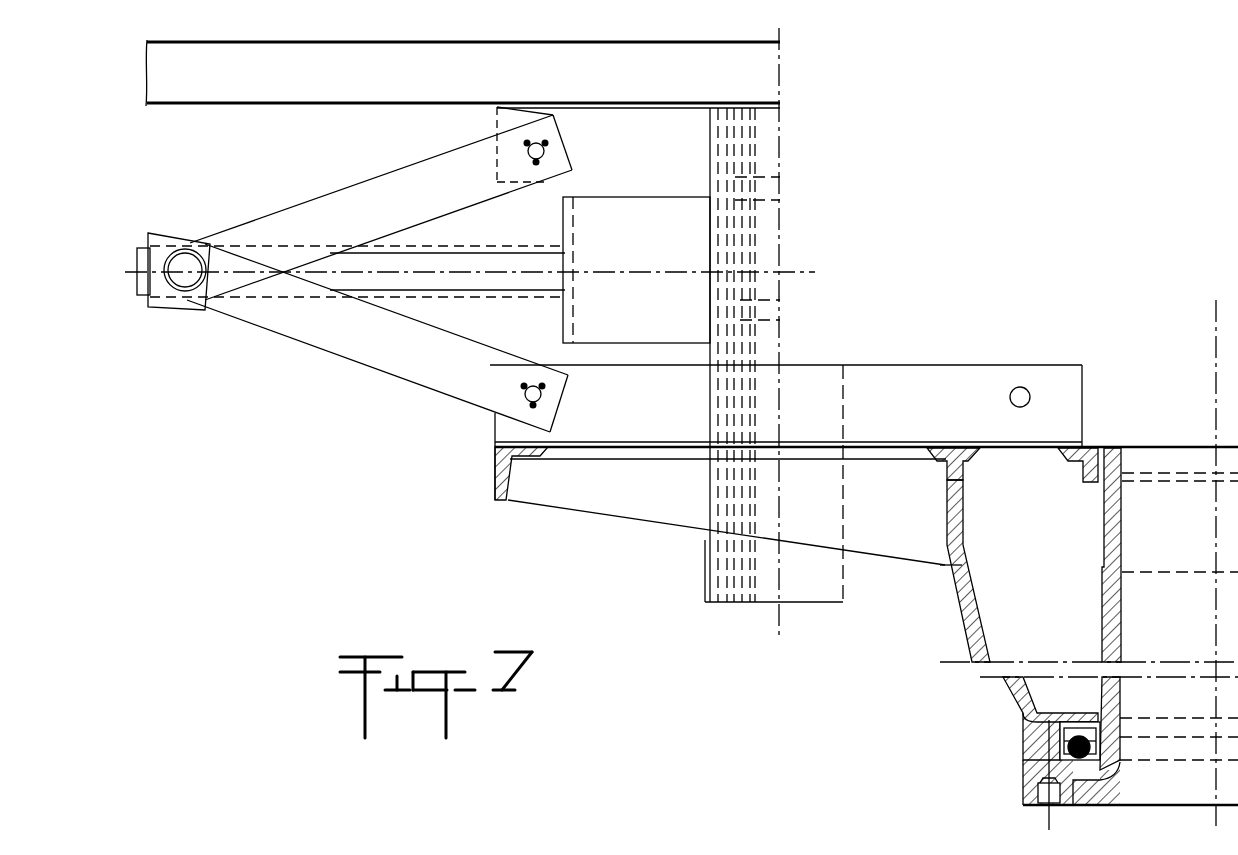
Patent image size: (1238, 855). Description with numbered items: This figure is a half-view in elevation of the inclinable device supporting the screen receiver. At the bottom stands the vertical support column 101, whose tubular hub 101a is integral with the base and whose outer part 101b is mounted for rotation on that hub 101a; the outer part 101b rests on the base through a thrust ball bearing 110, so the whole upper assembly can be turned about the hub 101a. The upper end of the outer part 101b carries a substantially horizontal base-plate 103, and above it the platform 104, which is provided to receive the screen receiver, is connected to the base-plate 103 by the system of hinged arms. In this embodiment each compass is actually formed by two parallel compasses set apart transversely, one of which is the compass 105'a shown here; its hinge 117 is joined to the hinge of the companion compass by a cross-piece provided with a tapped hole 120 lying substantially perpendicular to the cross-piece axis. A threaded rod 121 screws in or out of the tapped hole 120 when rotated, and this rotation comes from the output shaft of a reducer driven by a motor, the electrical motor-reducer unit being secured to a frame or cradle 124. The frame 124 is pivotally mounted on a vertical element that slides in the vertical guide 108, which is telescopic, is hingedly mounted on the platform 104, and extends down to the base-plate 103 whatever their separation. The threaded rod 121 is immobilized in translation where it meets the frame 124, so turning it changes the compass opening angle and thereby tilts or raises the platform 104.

The platform 104 is at (328, 77).
The tapped hole 120 is at (155, 233).
The hinge 117 is at (188, 292).
The compass 105'a is at (377, 338).
The threaded rod 121 is at (465, 260).
The frame or cradle 124 is at (690, 238).
The fixed vertical guide 108 is at (764, 158).
The base-plate 103 is at (948, 380).
The vertical support column 101 is at (866, 638).
The outer part of the column 101b is at (963, 600).
The hub 101a is at (1100, 607).
The thrust ball bearing 110 is at (1052, 740).